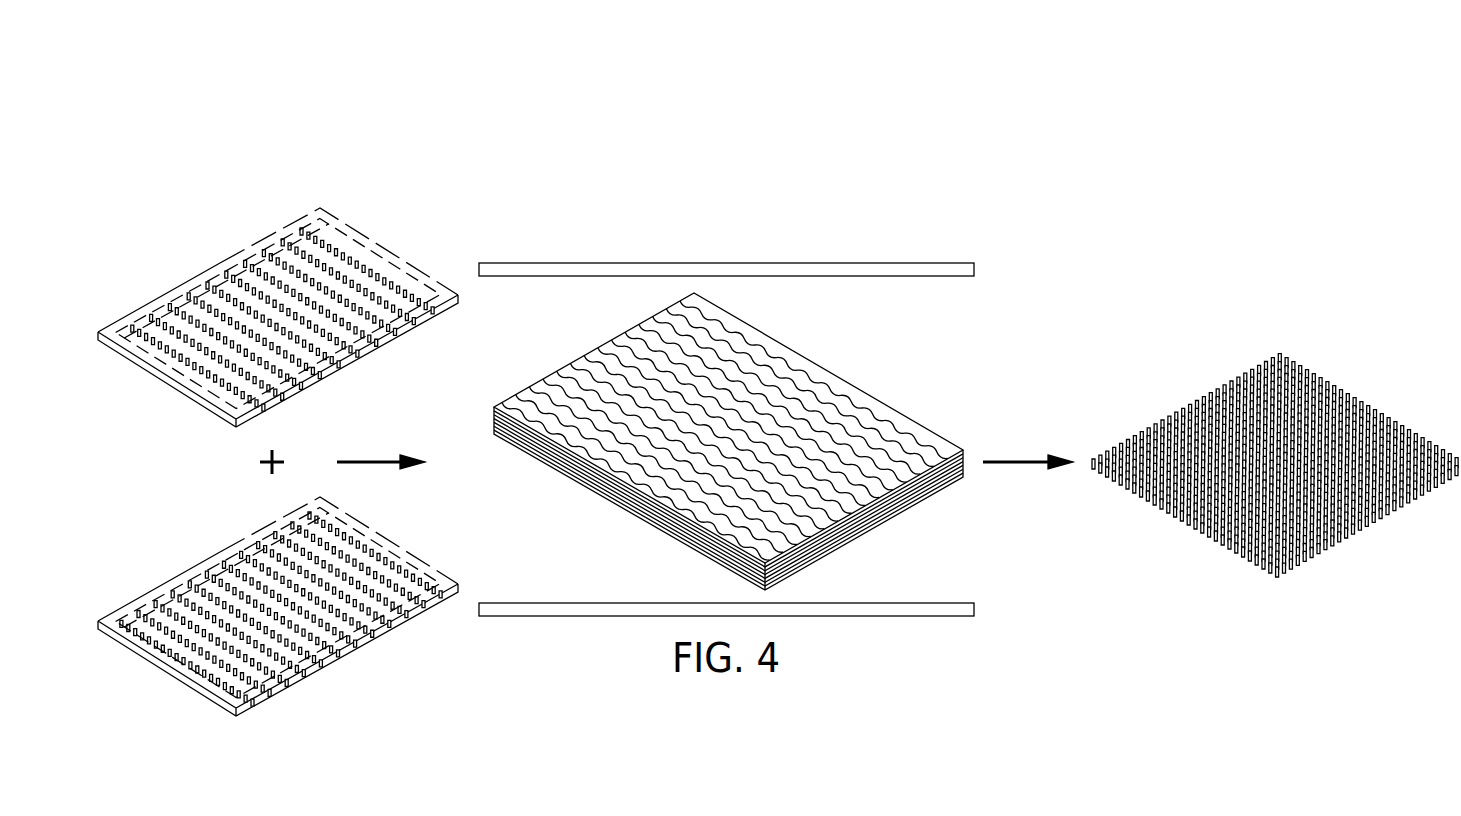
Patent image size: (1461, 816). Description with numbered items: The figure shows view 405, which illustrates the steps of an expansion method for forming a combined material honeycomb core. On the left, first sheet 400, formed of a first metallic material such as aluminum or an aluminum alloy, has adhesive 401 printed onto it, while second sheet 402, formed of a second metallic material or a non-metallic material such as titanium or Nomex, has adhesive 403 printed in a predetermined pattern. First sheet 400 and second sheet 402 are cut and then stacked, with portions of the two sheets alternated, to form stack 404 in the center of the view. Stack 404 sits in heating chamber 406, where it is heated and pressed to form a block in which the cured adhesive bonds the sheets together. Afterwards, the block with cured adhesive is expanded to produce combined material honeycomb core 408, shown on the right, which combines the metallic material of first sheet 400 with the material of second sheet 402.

The first sheet 400 is at (216, 224).
The adhesive 401 is at (405, 277).
The second sheet 402 is at (188, 544).
The adhesive 403 is at (392, 552).
The stack 404 is at (863, 371).
The view 405 is at (726, 336).
The heating chamber 406 is at (595, 263).
The combined material honeycomb core 408 is at (1369, 364).